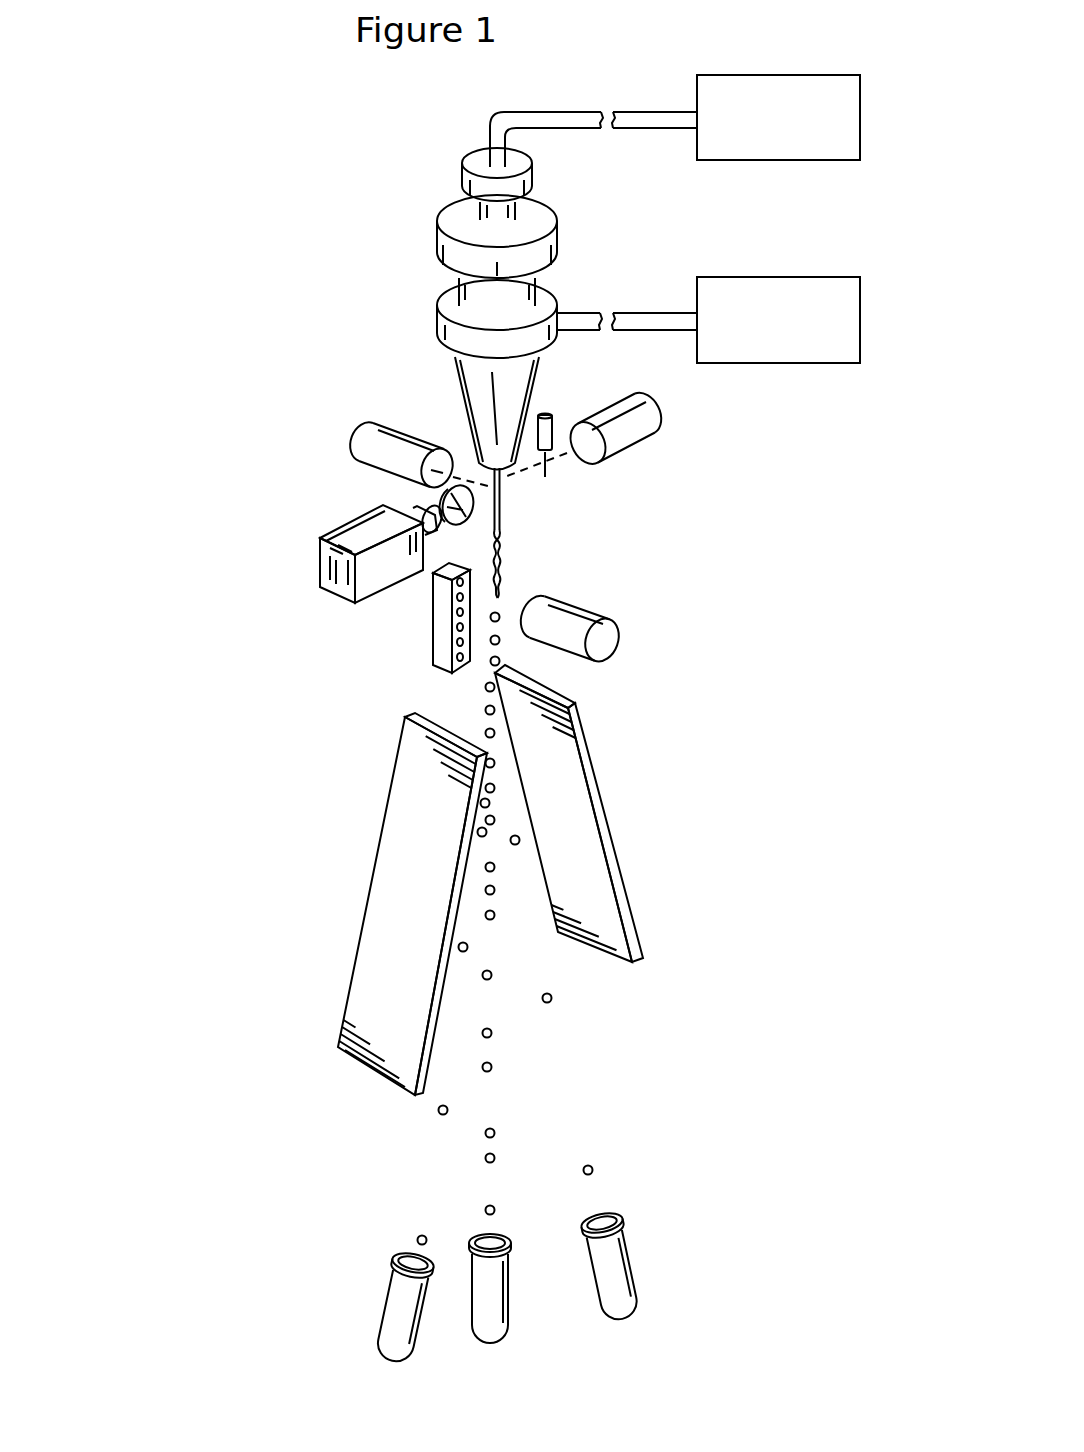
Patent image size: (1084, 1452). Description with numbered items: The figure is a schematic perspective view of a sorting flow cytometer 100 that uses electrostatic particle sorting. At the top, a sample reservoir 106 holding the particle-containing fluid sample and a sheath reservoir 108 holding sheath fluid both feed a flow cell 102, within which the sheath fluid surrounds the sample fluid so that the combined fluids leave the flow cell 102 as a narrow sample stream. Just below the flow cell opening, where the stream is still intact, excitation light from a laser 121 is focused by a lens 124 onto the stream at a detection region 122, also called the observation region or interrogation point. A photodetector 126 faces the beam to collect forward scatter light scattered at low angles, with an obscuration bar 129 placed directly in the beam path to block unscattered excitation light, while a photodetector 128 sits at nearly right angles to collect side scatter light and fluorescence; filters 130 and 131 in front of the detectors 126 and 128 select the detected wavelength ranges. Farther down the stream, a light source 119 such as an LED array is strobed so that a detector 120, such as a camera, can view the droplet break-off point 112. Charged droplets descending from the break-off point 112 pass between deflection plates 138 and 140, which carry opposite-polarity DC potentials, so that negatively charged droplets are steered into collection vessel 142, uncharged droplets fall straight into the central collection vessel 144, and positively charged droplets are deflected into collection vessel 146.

The sorting flow cytometer 100 is at (206, 284).
The flow cell 102 is at (386, 323).
The sample reservoir 106 is at (783, 160).
The sheath reservoir 108 is at (745, 277).
The droplet break-off point 112 is at (498, 587).
The light source 119 is at (440, 633).
The detector 120 is at (607, 643).
The laser 121 is at (327, 562).
The detection region 122 is at (503, 485).
The lens 124 is at (440, 504).
The photodetector 126 is at (660, 412).
The photodetector 128 is at (372, 432).
The obscuration bar 129 is at (557, 430).
The filter 130 is at (607, 463).
The filter 131 is at (443, 443).
The deflection plate 138 is at (420, 772).
The deflection plate 140 is at (578, 760).
The collection vessel 142 is at (400, 1317).
The central collection vessel 144 is at (497, 1307).
The collection vessel 146 is at (617, 1267).